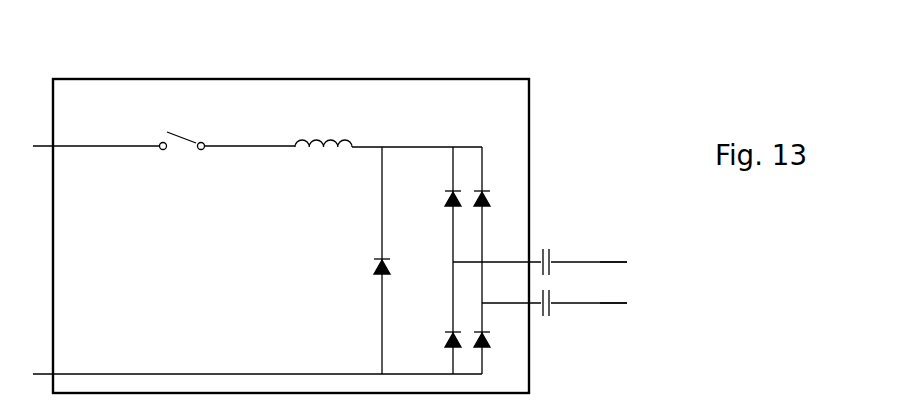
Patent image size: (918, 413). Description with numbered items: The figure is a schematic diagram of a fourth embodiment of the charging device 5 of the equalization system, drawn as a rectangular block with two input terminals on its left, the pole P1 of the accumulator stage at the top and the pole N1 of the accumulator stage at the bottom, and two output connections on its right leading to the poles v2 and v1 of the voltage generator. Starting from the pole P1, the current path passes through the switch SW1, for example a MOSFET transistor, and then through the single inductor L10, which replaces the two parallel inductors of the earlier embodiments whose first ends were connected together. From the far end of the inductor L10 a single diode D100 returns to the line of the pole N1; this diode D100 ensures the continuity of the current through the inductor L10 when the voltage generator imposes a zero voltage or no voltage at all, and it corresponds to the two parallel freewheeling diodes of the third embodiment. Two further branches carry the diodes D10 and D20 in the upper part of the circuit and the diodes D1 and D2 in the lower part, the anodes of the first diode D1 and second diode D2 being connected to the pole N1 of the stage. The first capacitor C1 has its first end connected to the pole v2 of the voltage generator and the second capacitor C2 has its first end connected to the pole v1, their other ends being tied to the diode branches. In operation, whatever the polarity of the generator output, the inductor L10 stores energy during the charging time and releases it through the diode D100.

The charging device 5 is at (180, 79).
The pole P of the accumulator stage P1 is at (81, 154).
The pole N of the accumulator stage N1 is at (242, 358).
The switch SW1 is at (220, 130).
The inductor L10 is at (388, 127).
The diode D100 is at (351, 267).
The diode D10 is at (429, 198).
The diode D20 is at (502, 210).
The first diode D1 is at (434, 345).
The second diode D2 is at (499, 345).
The first capacitor C1 is at (549, 250).
The second capacitor C2 is at (549, 319).
The pole v1 of the voltage generator v1 is at (612, 317).
The pole v2 of the voltage generator v2 is at (612, 246).